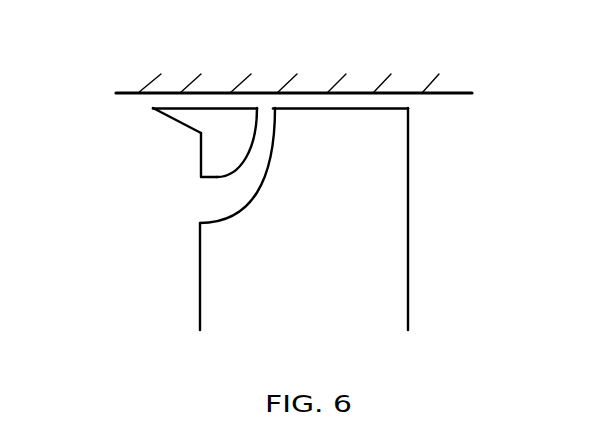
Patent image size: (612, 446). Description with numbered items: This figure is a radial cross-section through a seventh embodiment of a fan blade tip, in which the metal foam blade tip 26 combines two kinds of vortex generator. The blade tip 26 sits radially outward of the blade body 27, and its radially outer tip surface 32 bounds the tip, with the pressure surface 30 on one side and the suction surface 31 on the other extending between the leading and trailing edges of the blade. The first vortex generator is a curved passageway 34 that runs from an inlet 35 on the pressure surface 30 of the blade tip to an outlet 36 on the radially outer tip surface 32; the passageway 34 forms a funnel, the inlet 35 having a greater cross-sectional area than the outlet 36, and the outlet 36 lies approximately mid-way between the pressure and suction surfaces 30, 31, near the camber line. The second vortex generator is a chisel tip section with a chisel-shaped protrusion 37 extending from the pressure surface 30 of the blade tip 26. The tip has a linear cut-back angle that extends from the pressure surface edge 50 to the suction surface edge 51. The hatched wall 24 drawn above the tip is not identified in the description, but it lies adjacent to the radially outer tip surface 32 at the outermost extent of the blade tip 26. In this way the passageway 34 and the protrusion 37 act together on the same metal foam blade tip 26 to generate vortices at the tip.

The housing wall 24 is at (307, 85).
The blade tip 26 is at (430, 143).
The blade body 27 is at (365, 297).
The pressure surface 30 is at (200, 270).
The suction surface 31 is at (408, 252).
The radially outer tip surface 32 is at (357, 110).
The passageway 34 is at (219, 197).
The inlet 35 is at (200, 198).
The outlet 36 is at (268, 101).
The chisel-shaped protrusion 37 is at (188, 118).
The pressure surface edge 50 is at (153, 108).
The suction surface edge 51 is at (408, 109).